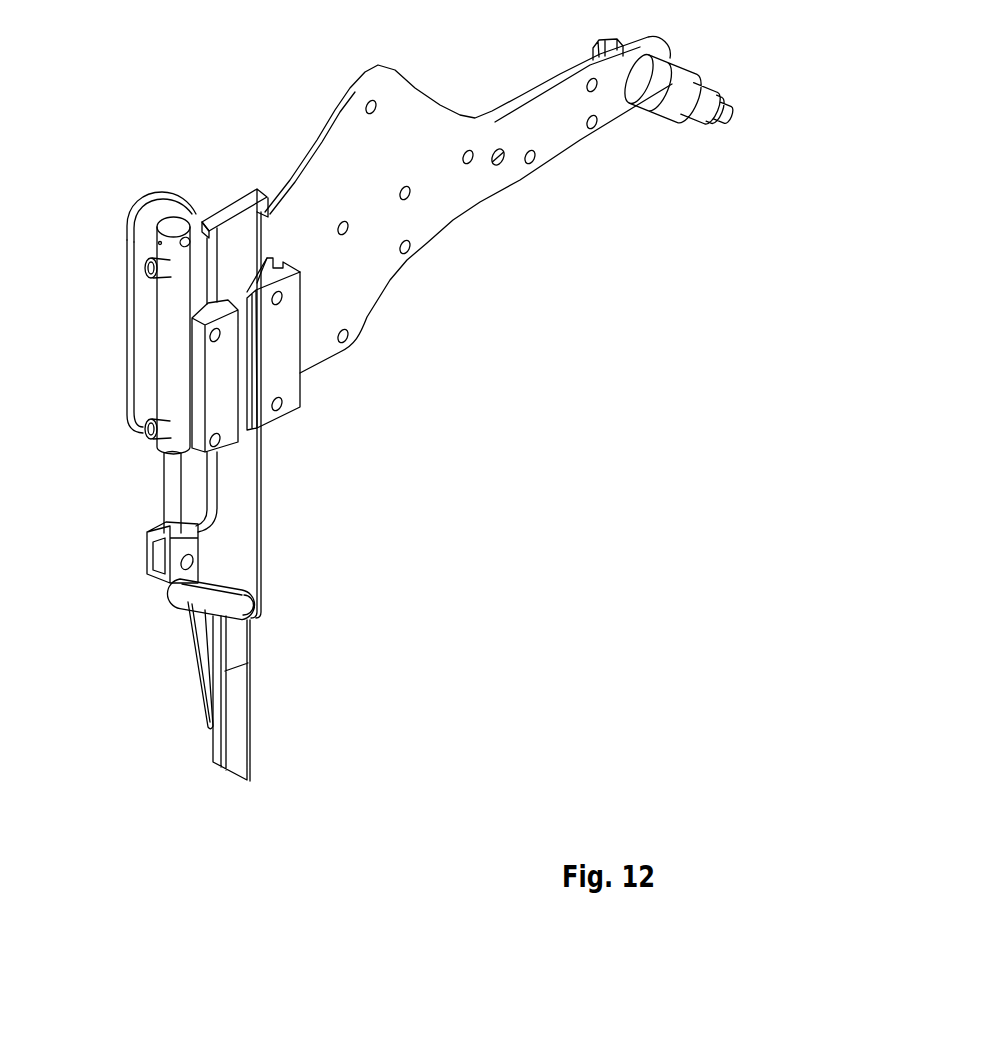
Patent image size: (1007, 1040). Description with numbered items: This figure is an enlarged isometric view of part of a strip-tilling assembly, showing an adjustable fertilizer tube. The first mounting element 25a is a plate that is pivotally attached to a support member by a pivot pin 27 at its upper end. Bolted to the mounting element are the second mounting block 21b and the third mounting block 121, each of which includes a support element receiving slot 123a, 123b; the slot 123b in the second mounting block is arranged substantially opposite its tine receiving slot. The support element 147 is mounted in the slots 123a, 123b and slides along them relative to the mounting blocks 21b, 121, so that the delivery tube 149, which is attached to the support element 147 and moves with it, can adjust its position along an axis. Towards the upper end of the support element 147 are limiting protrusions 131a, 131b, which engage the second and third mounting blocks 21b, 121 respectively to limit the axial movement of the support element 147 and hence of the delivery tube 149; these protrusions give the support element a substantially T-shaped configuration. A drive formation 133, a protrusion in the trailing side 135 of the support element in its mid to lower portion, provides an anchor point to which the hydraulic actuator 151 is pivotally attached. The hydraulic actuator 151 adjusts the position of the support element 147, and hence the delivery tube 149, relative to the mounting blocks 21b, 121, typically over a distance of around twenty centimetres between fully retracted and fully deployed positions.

The first mounting element 25a is at (387, 273).
The pivot pin 27 is at (724, 127).
The hydraulic actuator 151 is at (172, 373).
The support element receiving slot 123a is at (195, 304).
The limiting protrusion 131a is at (257, 190).
The limiting protrusion 131b is at (203, 222).
The trailing side 135 is at (208, 500).
The third mounting block 121 is at (225, 415).
The second mounting block 21b is at (295, 397).
The support element receiving slot 123b is at (257, 283).
The support element 147 is at (245, 520).
The drive formation 133 is at (157, 570).
The delivery tube 149 is at (237, 708).